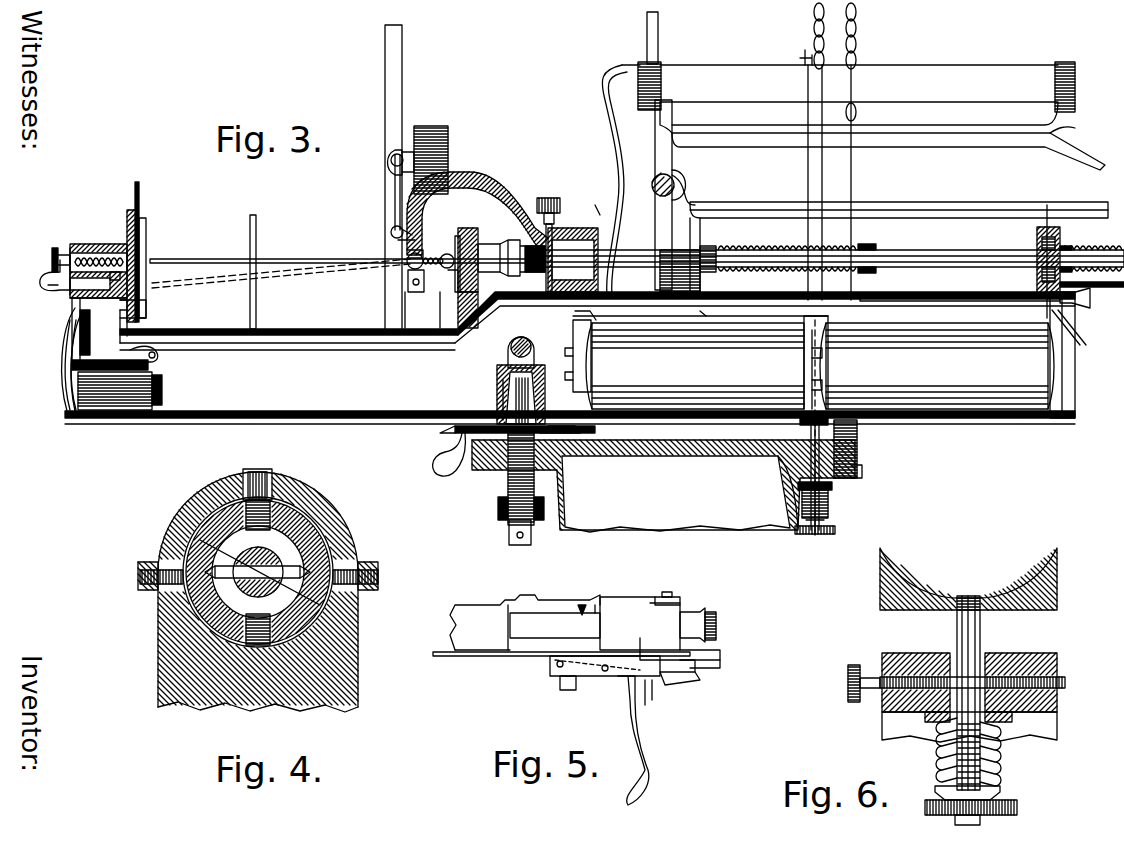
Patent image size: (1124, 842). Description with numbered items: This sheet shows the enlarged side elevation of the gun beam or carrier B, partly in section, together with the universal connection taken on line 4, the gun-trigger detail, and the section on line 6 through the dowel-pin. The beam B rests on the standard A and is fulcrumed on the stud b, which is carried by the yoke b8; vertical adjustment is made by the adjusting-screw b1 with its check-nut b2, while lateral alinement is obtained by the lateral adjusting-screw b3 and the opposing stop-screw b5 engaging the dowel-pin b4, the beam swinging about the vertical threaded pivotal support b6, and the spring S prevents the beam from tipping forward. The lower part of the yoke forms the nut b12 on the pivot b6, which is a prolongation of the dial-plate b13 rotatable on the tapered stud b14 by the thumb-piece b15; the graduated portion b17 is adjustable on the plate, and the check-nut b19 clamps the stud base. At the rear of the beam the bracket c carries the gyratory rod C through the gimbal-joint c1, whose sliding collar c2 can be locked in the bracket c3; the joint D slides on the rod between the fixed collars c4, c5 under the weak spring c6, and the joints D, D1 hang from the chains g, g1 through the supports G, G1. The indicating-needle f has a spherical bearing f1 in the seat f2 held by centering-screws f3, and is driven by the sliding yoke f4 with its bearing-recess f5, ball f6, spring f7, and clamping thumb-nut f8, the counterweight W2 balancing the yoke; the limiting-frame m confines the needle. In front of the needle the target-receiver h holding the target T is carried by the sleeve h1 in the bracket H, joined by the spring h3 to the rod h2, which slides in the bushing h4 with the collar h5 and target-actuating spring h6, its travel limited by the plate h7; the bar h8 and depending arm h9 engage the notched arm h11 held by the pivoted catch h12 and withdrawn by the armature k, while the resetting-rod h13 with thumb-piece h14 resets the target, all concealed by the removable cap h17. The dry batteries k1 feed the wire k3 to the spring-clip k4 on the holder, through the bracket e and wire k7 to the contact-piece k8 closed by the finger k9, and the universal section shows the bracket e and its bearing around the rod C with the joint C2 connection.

In FIG. 3, the gun beam or carrier B is at (352, 416).
In FIG. 3, the supporting sub-base or standard A is at (730, 495).
In FIG. 3, the stud b is at (500, 368).
In FIG. 3, the adjusting-screw b1 is at (856, 437).
In FIG. 3, the check-nut b2 is at (858, 474).
In FIG. 3, the dowel-pin b4 is at (810, 433).
In FIG. 6, the dowel-pin b4 is at (980, 640).
In FIG. 3, the vertical threaded pivotal support b6 is at (503, 388).
In FIG. 3, the yoke b8 is at (508, 348).
In FIG. 3, the nut b12 is at (545, 386).
In FIG. 3, the dial-plate b13 is at (565, 442).
In FIG. 3, the tapered stud or rest b14 is at (517, 430).
In FIG. 3, the thumb-piece b15 is at (440, 455).
In FIG. 3, the graduated portion of dial-plate b17 is at (462, 432).
In FIG. 3, the check-nut b19 is at (505, 512).
In FIG. 6, the lateral adjusting-screw b3 is at (848, 686).
In FIG. 6, the stop-screw b5 is at (1060, 676).
In FIG. 6, the spring S is at (988, 752).
In FIG. 3, the section line 6 6 is at (812, 434).
In FIG. 3, the section line 4 4 is at (1042, 257).
In FIG. 3, the dry batteries k1 is at (813, 360).
In FIG. 3, the armature k is at (68, 400).
In FIG. 3, the wire k3 is at (620, 160).
In FIG. 3, the spring-clip k4 is at (650, 118).
In FIG. 5, the wire k7 is at (470, 656).
In FIG. 3, the insulated contact-piece k8 is at (593, 199).
In FIG. 5, the insulated contact-piece k8 is at (676, 686).
In FIG. 5, the finger k9 is at (646, 703).
In FIG. 3, the gyratory rod C is at (905, 255).
In FIG. 3, the bearing C2 is at (512, 232).
In FIG. 3, the bracket c is at (1062, 285).
In FIG. 4, the bracket c is at (320, 610).
In FIG. 3, the gimbal-joint c1 is at (1055, 250).
In FIG. 4, the gimbal-joint c1 is at (250, 545).
In FIG. 3, the sliding collar c2 is at (991, 295).
In FIG. 3, the bracket c3 is at (470, 230).
In FIG. 3, the fixed collar c4 is at (858, 246).
In FIG. 3, the fixed collar c5 is at (1085, 246).
In FIG. 3, the spring c6 is at (775, 246).
In FIG. 4, the bracket e is at (345, 518).
In FIG. 3, the joint of gun-support D is at (862, 212).
In FIG. 3, the joint of gun-holder D1 is at (925, 75).
In FIG. 3, the vertical support G is at (387, 95).
In FIG. 3, the vertical support G1 is at (800, 55).
In FIG. 3, the chain g is at (858, 40).
In FIG. 3, the chain g1 is at (812, 14).
In FIG. 3, the counterweight W2 is at (448, 132).
In FIG. 3, the indicating-needle f is at (270, 262).
In FIG. 3, the spherical bearing f1 is at (450, 290).
In FIG. 3, the bearing-seat f2 is at (470, 292).
In FIG. 3, the centering-screws f3 is at (445, 255).
In FIG. 3, the sliding yoke f4 is at (472, 185).
In FIG. 3, the bearing-recess f5 is at (410, 275).
In FIG. 3, the ball f6 is at (425, 290).
In FIG. 3, the spring f7 is at (425, 250).
In FIG. 3, the clamping-screw and thumb-nut f8 is at (562, 206).
In FIG. 3, the rectangular limiting-frame m is at (257, 228).
In FIG. 3, the target T is at (140, 200).
In FIG. 3, the bracket H is at (102, 260).
In FIG. 3, the target-receiver h is at (130, 215).
In FIG. 3, the tubular sleeve h1 is at (75, 243).
In FIG. 3, the rod h2 is at (42, 278).
In FIG. 3, the spring h3 is at (97, 244).
In FIG. 3, the bushing h4 is at (70, 296).
In FIG. 3, the collar h5 is at (145, 275).
In FIG. 3, the target-actuating spring h6 is at (75, 305).
In FIG. 3, the washer or plate h7 is at (54, 252).
In FIG. 3, the bar h8 is at (130, 322).
In FIG. 3, the depending arm h9 is at (82, 330).
In FIG. 3, the notched arm h11 is at (152, 372).
In FIG. 3, the pivoted catch h12 is at (68, 378).
In FIG. 3, the resetting-rod h13 is at (282, 346).
In FIG. 3, the thumb-piece h14 is at (1080, 312).
In FIG. 3, the removable cap h17 is at (70, 358).